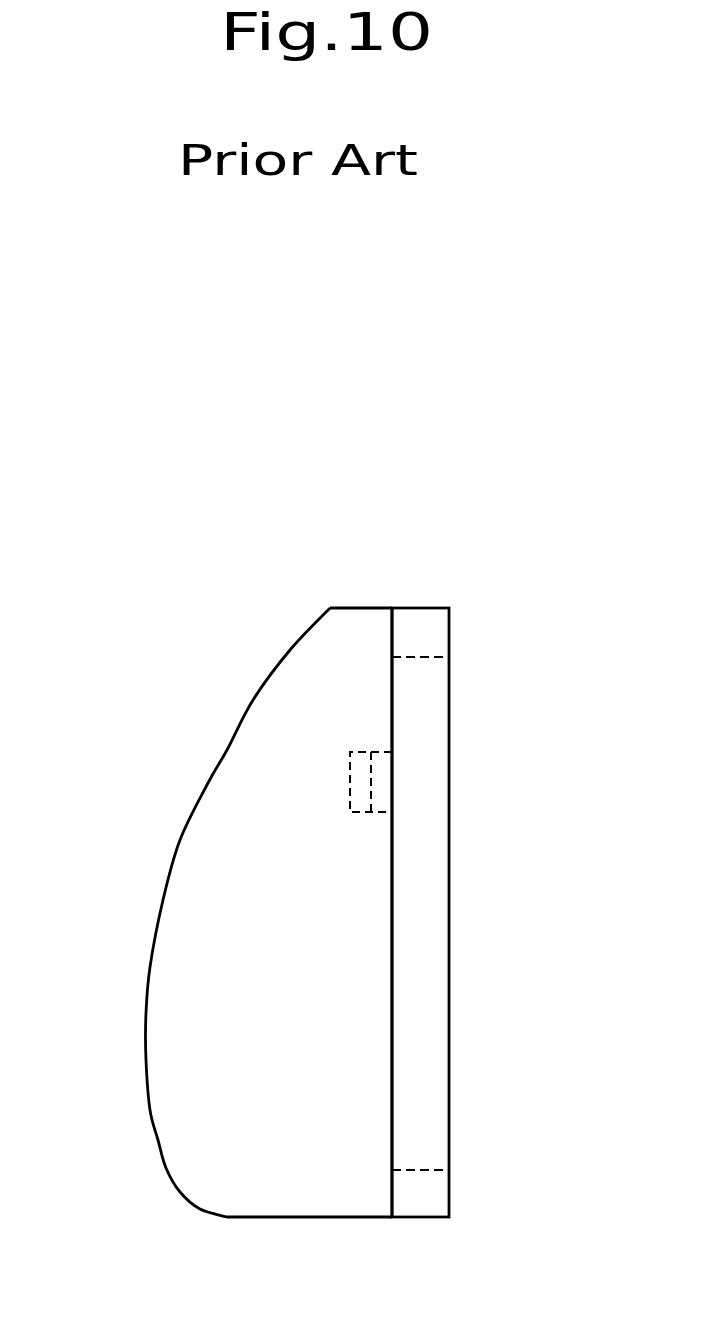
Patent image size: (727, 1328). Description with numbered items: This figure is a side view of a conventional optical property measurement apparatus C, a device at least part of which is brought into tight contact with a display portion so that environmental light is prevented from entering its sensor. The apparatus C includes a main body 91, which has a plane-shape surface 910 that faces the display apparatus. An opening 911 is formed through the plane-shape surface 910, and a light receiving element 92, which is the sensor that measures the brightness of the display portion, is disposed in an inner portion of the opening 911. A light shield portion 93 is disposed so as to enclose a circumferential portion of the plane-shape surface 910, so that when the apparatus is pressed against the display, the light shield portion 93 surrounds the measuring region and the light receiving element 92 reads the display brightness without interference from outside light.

The optical property measurement apparatus C is at (208, 575).
The main body 91 is at (228, 797).
The light receiving element 92 is at (348, 763).
The light shield portion 93 is at (422, 698).
The plane-shape surface 910 is at (392, 982).
The opening 911 is at (378, 752).